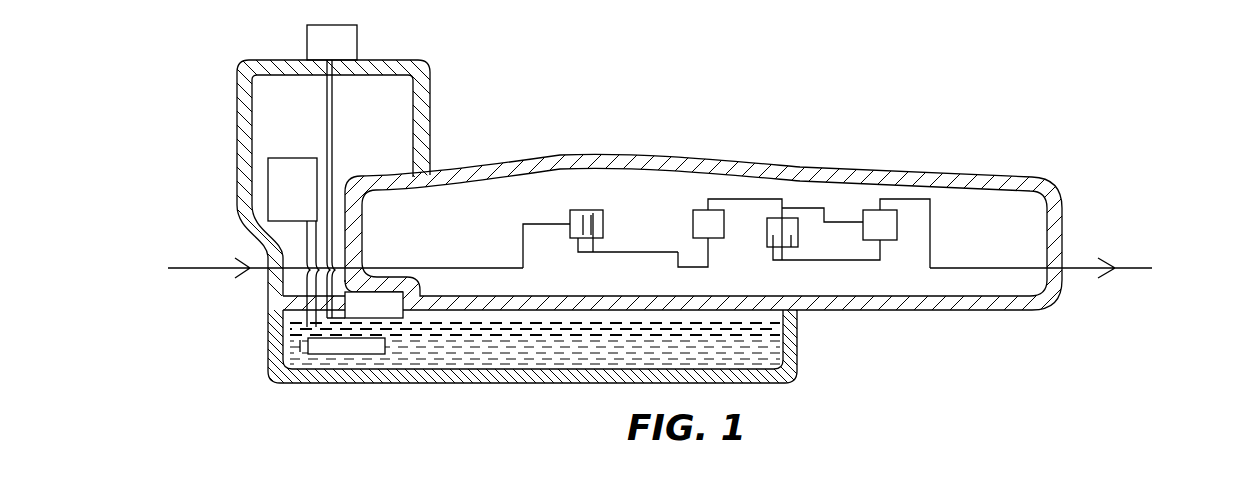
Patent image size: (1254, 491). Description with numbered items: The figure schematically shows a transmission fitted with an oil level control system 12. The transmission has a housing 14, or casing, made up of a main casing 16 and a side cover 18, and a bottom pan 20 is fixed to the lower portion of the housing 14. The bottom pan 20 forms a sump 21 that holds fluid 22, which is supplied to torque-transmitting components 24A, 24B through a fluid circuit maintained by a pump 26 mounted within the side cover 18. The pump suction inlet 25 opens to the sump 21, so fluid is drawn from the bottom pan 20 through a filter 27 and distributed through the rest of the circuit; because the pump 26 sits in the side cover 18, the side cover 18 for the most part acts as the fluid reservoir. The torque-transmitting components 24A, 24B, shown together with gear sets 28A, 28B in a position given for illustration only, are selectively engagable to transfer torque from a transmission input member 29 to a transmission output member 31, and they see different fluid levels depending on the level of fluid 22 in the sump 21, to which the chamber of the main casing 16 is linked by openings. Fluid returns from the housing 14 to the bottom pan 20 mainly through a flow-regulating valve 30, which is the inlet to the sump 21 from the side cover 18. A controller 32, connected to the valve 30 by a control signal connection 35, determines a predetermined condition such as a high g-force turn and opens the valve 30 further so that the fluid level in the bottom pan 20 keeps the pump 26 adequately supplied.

The oil level control system 12 is at (652, 250).
The housing 14 is at (672, 182).
The main casing 16 is at (487, 160).
The side cover 18 is at (240, 160).
The bottom pan 20 is at (504, 383).
The sump 21 is at (288, 366).
The fluid 22 is at (563, 291).
The torque-transmitting component 24A is at (587, 204).
The torque-transmitting component 24B is at (807, 234).
The pump suction inlet 25 is at (300, 352).
The pump 26 is at (293, 242).
The filter 27 is at (340, 356).
The gear set 28A is at (737, 224).
The gear set 28B is at (907, 224).
The transmission input member 29 is at (205, 267).
The flow-regulating valve 30 is at (405, 318).
The transmission output member 31 is at (1130, 265).
The controller 32 is at (358, 45).
The control signal connection 35 is at (330, 120).